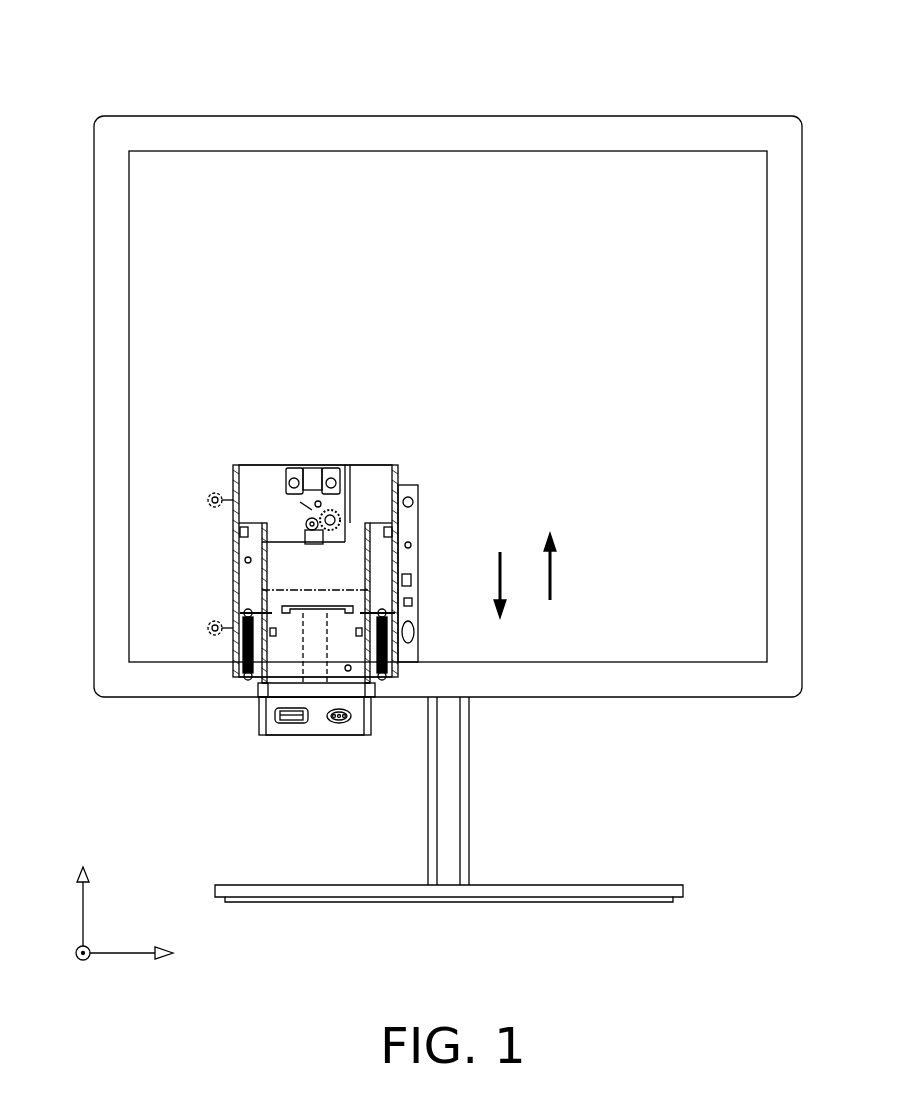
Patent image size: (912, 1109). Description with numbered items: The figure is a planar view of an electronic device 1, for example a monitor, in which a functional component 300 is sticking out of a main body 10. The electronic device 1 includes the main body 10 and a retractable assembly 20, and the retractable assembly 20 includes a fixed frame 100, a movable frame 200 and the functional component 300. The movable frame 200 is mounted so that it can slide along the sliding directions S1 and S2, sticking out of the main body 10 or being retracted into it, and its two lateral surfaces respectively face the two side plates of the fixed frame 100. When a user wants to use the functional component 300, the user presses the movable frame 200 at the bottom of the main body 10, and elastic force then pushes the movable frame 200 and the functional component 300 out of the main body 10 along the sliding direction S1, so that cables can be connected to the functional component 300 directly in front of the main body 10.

The electronic device 1 is at (48, 37).
The main body 10 is at (108, 283).
The retractable assembly 20 is at (212, 563).
The fixed frame 100 is at (247, 583).
The movable frame 200 is at (258, 707).
The functional component 300 is at (291, 724).
The sliding direction S1 is at (513, 585).
The sliding direction S2 is at (563, 566).